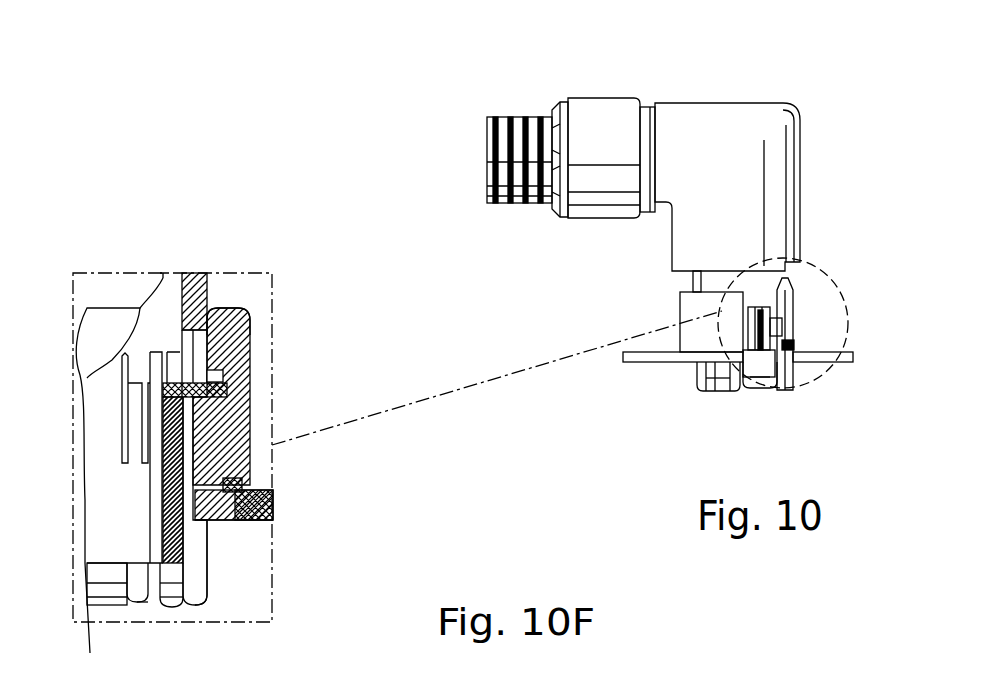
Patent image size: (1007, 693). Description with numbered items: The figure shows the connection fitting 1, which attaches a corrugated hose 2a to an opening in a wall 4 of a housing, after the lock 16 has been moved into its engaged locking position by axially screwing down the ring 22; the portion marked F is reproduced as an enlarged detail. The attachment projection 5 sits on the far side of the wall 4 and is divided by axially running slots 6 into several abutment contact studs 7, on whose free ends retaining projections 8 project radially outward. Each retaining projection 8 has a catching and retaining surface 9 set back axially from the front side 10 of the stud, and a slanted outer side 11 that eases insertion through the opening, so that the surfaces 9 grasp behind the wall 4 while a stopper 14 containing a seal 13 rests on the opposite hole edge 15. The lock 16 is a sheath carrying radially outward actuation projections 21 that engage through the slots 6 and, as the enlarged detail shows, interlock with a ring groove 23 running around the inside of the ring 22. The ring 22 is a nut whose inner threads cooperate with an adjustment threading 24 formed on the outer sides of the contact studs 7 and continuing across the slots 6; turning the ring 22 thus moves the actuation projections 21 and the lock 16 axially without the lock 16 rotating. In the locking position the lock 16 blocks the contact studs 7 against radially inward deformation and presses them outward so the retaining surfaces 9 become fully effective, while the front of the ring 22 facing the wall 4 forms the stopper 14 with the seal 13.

In FIG. 10, the connection fitting 1 is at (813, 148).
In FIG. 10, the corrugated hose 2a is at (522, 122).
In FIG. 10, the wall 4 is at (645, 363).
In FIG. 10, the attachment projection 5 is at (718, 421).
In FIG. 10, the slots 6 is at (742, 394).
In FIG. 10F, the slots 6 is at (148, 601).
In FIG. 10, the abutment contact studs 7 is at (725, 394).
In FIG. 10F, the abutment contact studs 7 is at (107, 597).
In FIG. 10F, the retaining projections 8 is at (203, 530).
In FIG. 10F, the catching and retaining surface 9 is at (233, 519).
In FIG. 10F, the front side 10 is at (182, 608).
In FIG. 10F, the outer side 11 is at (210, 590).
In FIG. 10F, the seal 13 is at (250, 459).
In FIG. 10, the stopper 14 is at (795, 346).
In FIG. 10F, the stopper 14 is at (252, 478).
In FIG. 10F, the hole edge 15 is at (250, 515).
In FIG. 10, the lock 16 is at (757, 355).
In FIG. 10F, the lock 16 is at (176, 427).
In FIG. 10, the actuation projections 21 is at (808, 320).
In FIG. 10F, the actuation projections 21 is at (228, 389).
In FIG. 10, the ring 22 is at (800, 313).
In FIG. 10F, the ring 22 is at (222, 329).
In FIG. 10F, the ring groove 23 is at (219, 365).
In FIG. 10F, the adjustment threading 24 is at (170, 473).
In FIG. 10, the detail portion F is at (846, 308).